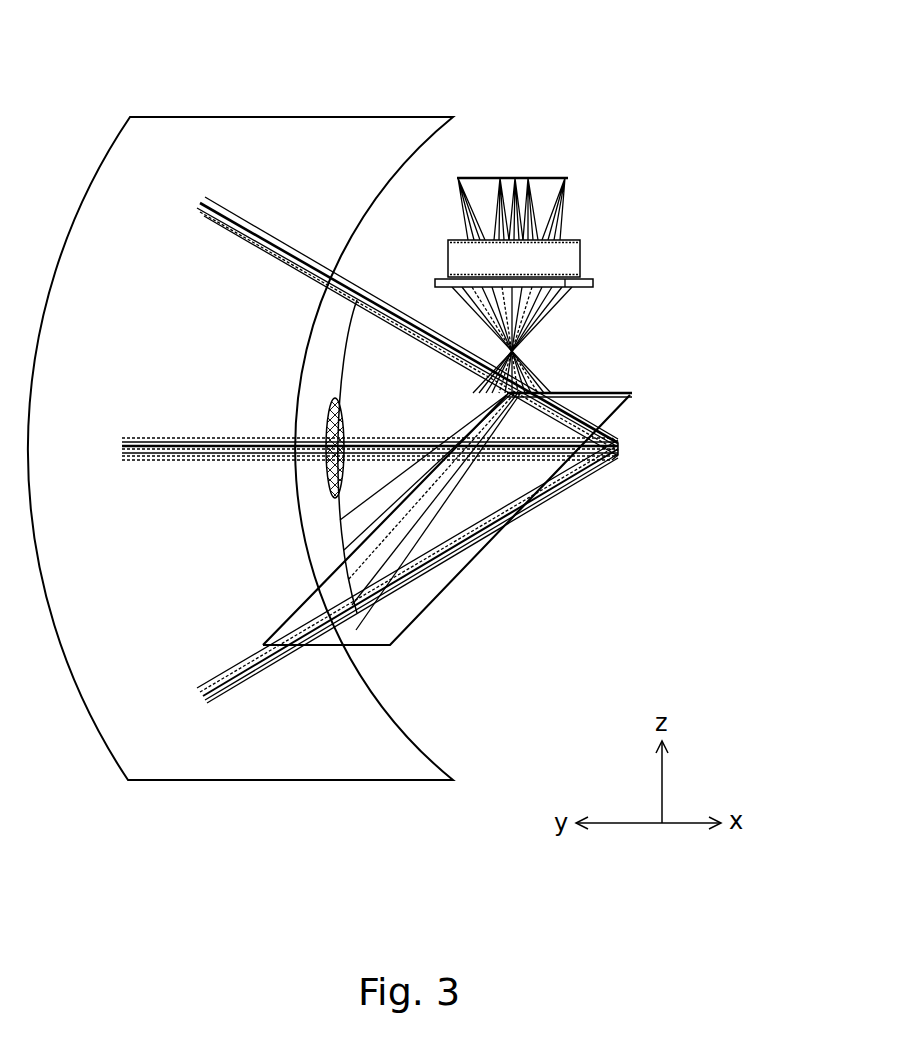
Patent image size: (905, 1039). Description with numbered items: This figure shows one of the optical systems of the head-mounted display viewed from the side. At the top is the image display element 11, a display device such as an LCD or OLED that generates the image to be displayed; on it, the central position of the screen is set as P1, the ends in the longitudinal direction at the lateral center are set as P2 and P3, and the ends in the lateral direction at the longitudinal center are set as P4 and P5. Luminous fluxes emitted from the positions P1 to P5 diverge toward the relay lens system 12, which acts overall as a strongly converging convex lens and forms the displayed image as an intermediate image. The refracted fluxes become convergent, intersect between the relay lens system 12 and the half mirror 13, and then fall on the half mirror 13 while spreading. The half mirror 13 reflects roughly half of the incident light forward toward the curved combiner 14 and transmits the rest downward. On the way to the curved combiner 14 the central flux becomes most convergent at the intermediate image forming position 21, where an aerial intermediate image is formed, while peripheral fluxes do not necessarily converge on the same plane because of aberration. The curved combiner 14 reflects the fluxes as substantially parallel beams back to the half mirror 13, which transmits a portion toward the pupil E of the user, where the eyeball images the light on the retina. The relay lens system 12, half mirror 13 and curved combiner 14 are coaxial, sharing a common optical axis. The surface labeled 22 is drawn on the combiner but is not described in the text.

The image display element 11 is at (548, 178).
The relay lens system 12 is at (604, 225).
The half mirror 13 is at (610, 393).
The curved combiner 14 is at (298, 117).
The intermediate image forming position 21 is at (345, 423).
The inner reflecting surface 22 is at (333, 538).
The pupil E is at (620, 449).
The central position of the screen P1 is at (515, 177).
The position indicating one end in the Y direction P2 is at (565, 177).
The position indicating the other end in the Y direction P3 is at (458, 177).
The position indicating one end in the X direction P4 is at (500, 177).
The position indicating the other end in the X direction P5 is at (528, 177).